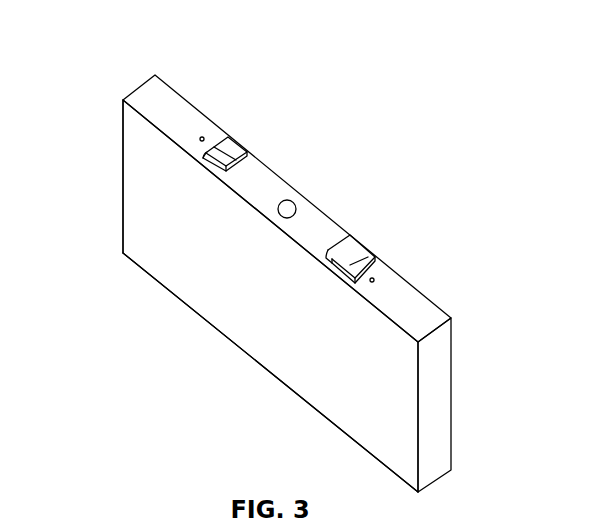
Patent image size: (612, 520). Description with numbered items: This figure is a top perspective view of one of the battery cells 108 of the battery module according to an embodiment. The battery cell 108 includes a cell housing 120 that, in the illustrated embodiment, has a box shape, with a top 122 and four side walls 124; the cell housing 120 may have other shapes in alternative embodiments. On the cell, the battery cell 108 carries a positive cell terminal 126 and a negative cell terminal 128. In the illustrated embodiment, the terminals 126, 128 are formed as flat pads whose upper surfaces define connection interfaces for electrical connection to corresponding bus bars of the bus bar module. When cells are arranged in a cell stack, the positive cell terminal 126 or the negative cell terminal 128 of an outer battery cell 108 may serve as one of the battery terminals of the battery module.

The battery cell 108 is at (360, 118).
The cell housing 120 is at (312, 318).
The top 122 is at (168, 96).
The side walls 124 is at (123, 185).
The positive cell terminal 126 is at (238, 148).
The negative cell terminal 128 is at (360, 250).